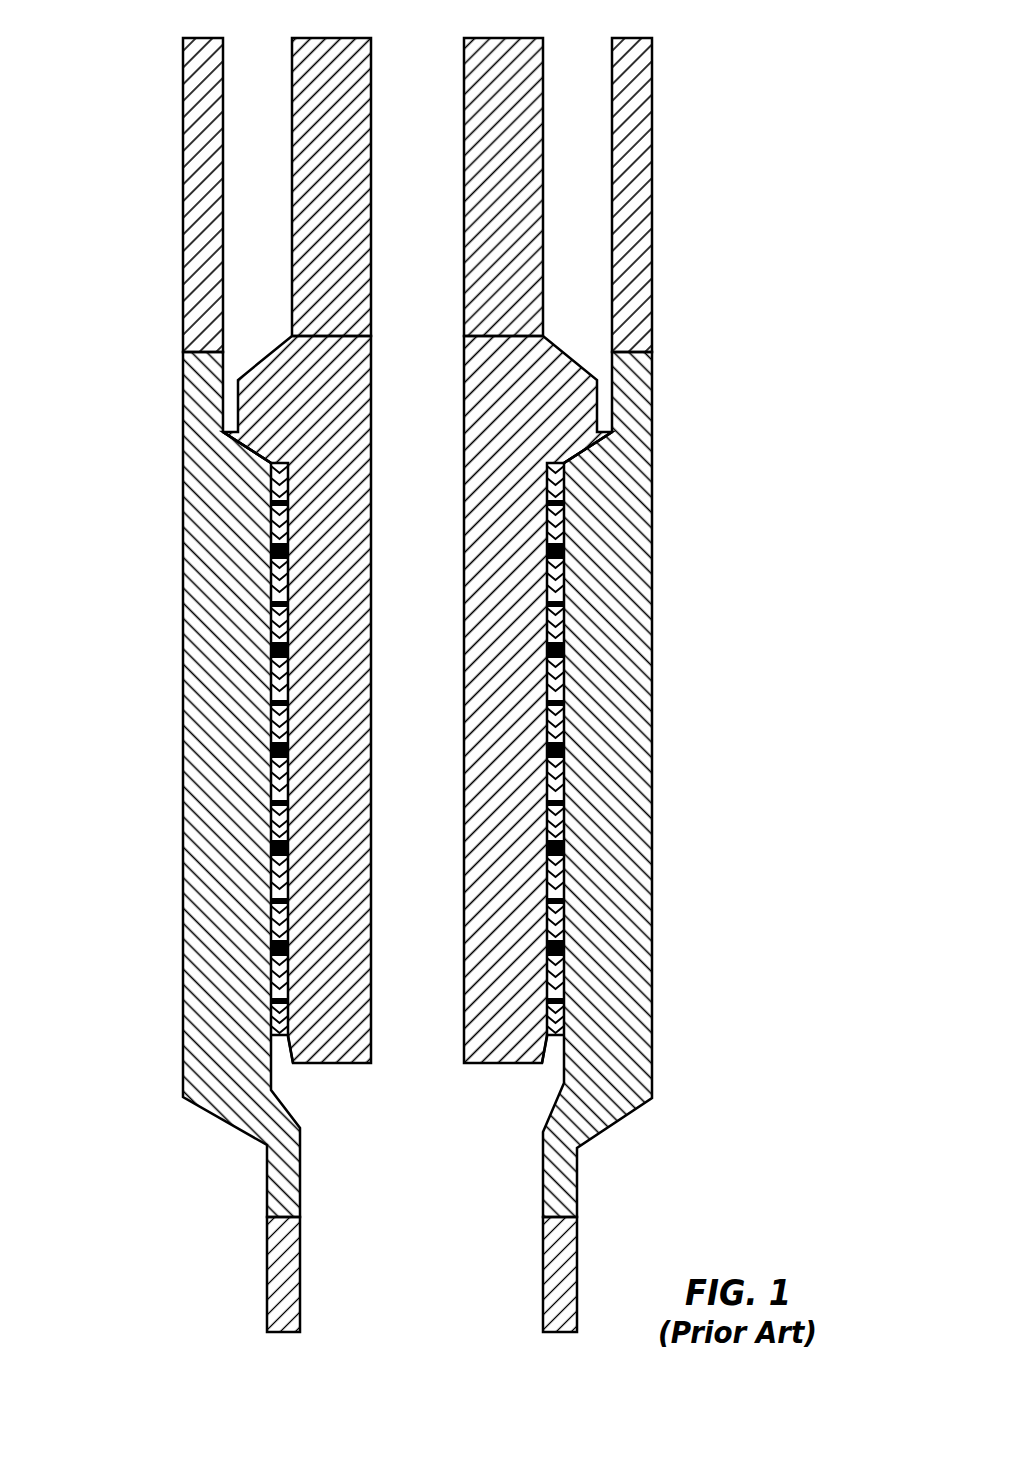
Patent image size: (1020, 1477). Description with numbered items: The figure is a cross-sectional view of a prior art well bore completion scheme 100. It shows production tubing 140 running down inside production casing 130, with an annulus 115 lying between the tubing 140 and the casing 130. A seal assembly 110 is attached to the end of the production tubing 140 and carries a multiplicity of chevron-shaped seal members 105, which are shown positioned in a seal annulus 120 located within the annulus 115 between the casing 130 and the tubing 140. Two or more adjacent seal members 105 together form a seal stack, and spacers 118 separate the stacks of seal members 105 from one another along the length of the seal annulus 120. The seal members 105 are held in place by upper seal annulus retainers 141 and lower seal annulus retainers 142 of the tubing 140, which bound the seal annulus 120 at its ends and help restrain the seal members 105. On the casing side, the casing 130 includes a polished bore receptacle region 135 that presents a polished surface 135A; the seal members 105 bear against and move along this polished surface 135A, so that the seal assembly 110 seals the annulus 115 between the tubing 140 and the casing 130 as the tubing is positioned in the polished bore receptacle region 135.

The well bore completion scheme 100 is at (134, 192).
The chevron-shaped seal members 105 is at (272, 582).
The seal assembly 110 is at (250, 398).
The annulus 115 is at (246, 62).
The spacers 118 is at (270, 648).
The seal annulus 120 is at (256, 919).
The production casing 130 is at (188, 78).
The polished bore receptacle region 135 is at (182, 672).
The polished surface 135A is at (272, 730).
The production tubing 140 is at (337, 47).
The upper seal annulus retainers 141 is at (247, 467).
The lower seal annulus retainers 142 is at (307, 1072).